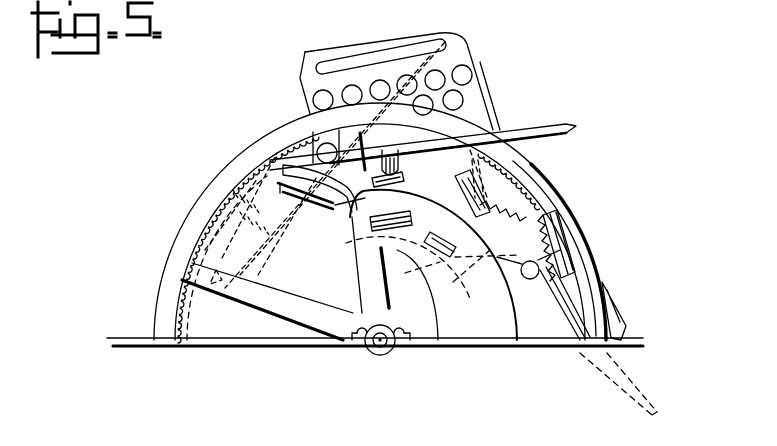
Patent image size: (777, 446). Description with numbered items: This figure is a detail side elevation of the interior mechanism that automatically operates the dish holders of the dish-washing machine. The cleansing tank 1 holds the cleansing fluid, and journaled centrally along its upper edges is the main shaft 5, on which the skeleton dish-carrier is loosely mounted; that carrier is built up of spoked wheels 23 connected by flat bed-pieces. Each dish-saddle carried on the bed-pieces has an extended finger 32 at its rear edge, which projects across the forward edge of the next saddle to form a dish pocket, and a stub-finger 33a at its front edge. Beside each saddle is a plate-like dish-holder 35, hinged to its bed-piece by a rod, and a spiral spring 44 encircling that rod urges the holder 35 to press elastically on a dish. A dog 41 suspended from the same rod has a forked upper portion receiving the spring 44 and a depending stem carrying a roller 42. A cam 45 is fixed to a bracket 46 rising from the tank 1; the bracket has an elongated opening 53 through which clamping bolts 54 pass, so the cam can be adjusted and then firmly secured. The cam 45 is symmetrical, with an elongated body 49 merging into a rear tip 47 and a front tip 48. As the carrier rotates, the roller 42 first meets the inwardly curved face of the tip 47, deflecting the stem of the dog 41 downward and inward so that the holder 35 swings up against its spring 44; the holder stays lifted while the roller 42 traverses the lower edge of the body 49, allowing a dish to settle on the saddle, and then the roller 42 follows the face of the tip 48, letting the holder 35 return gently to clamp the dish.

The cleansing tank 1 is at (506, 347).
The main shaft 5 is at (382, 348).
The spoked wheel 23 is at (381, 313).
The extended finger 32 is at (552, 129).
The bar extension 33a is at (600, 9).
The dish-holder 35 is at (458, 54).
The dog 41 is at (410, 176).
The roller 42 is at (531, 279).
The spiral spring 44 is at (362, 150).
The cam 45 is at (348, 200).
The bracket 46 is at (433, 265).
The rear tip 47 is at (553, 243).
The front tip 48 is at (278, 157).
The elongated body 49 is at (436, 185).
The elongated opening 53 is at (403, 229).
The clamping screws or bolts 54 is at (385, 223).